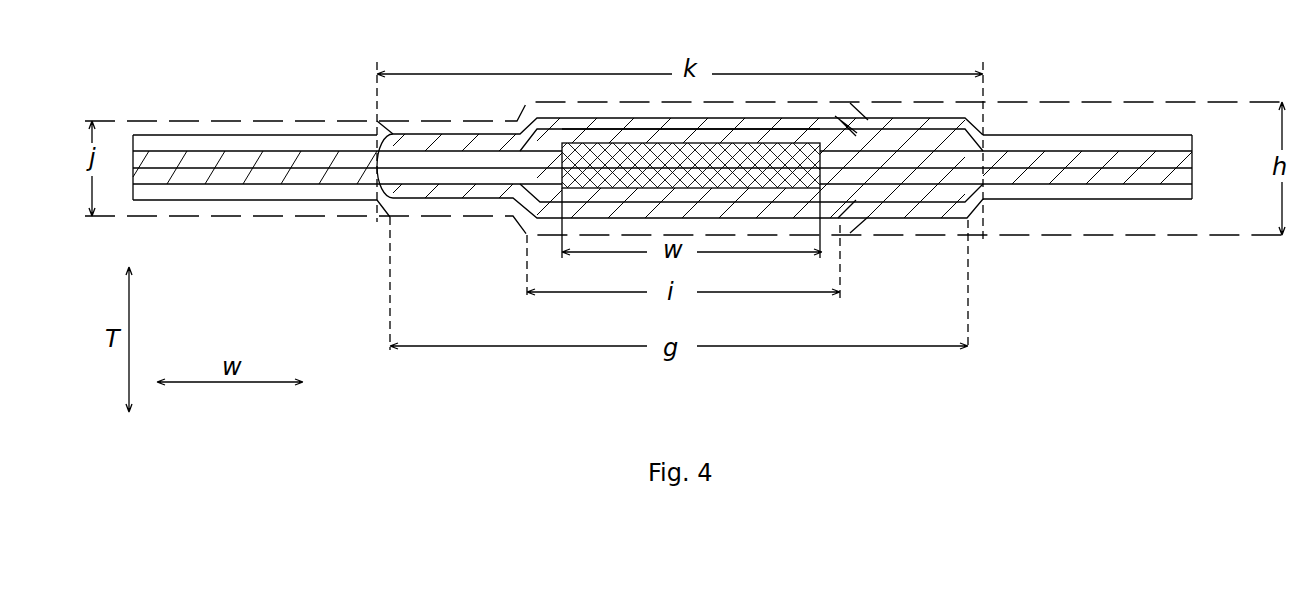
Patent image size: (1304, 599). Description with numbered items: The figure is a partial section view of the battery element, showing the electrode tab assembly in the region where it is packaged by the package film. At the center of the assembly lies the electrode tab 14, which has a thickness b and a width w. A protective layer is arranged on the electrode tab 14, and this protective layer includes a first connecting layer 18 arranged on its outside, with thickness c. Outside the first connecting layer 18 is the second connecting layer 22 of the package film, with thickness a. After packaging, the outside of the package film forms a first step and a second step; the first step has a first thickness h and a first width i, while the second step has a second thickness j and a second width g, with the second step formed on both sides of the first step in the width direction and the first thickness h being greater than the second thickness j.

The electrode tab 14 is at (782, 172).
The first connecting layer 18 is at (797, 133).
The second connecting layer 22 is at (648, 127).